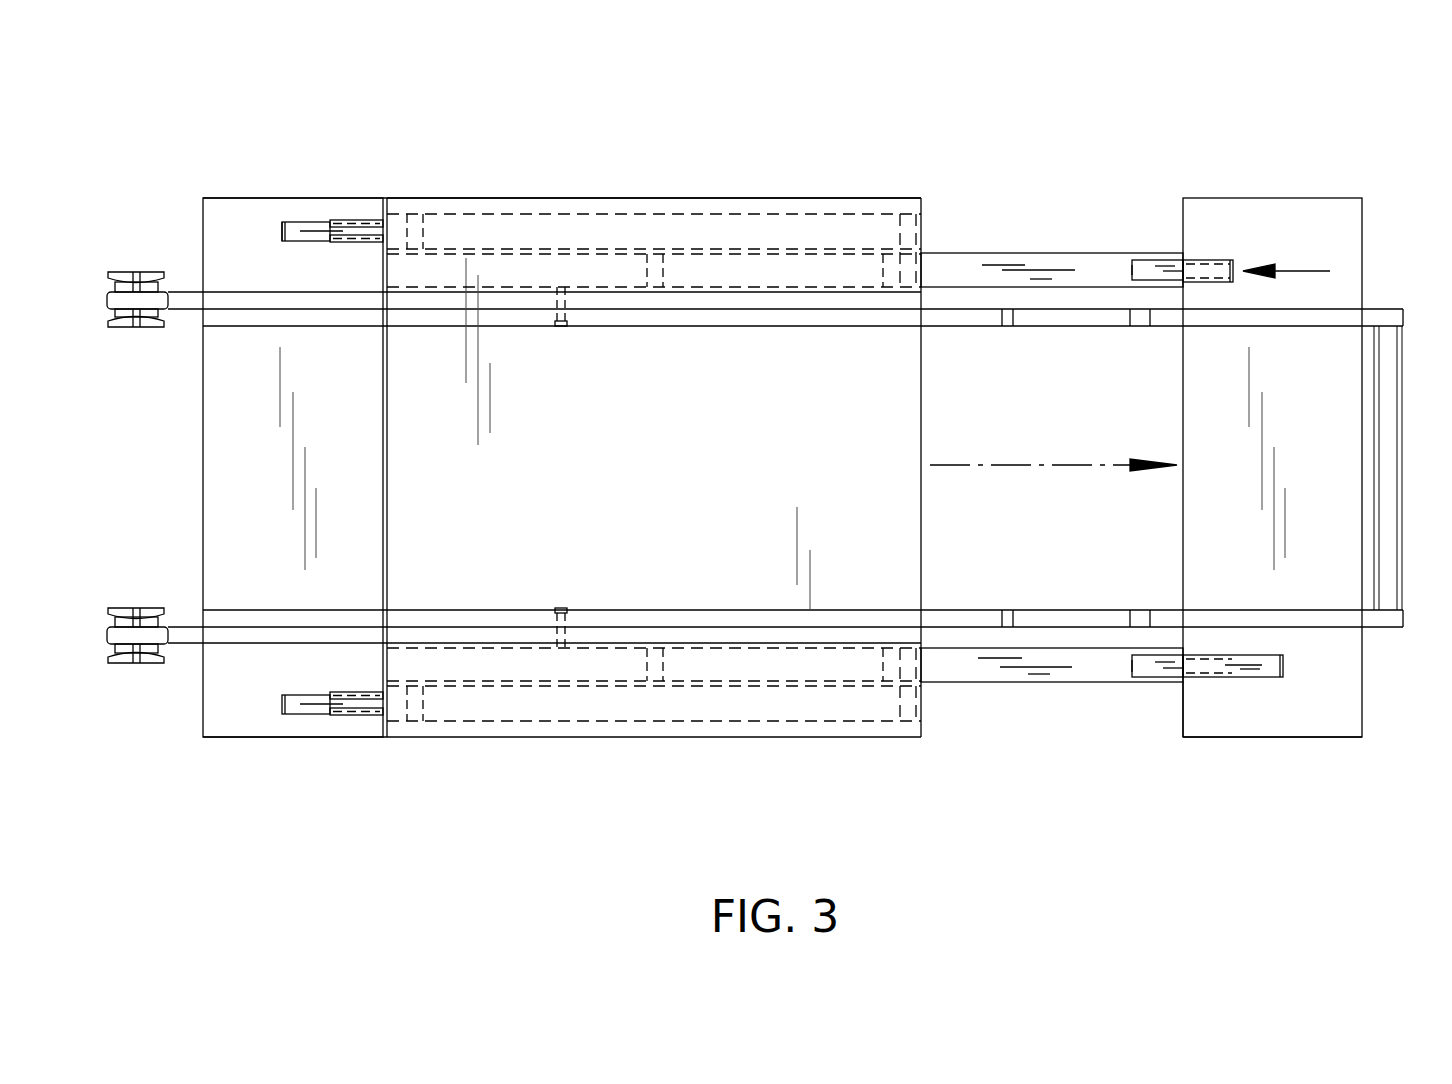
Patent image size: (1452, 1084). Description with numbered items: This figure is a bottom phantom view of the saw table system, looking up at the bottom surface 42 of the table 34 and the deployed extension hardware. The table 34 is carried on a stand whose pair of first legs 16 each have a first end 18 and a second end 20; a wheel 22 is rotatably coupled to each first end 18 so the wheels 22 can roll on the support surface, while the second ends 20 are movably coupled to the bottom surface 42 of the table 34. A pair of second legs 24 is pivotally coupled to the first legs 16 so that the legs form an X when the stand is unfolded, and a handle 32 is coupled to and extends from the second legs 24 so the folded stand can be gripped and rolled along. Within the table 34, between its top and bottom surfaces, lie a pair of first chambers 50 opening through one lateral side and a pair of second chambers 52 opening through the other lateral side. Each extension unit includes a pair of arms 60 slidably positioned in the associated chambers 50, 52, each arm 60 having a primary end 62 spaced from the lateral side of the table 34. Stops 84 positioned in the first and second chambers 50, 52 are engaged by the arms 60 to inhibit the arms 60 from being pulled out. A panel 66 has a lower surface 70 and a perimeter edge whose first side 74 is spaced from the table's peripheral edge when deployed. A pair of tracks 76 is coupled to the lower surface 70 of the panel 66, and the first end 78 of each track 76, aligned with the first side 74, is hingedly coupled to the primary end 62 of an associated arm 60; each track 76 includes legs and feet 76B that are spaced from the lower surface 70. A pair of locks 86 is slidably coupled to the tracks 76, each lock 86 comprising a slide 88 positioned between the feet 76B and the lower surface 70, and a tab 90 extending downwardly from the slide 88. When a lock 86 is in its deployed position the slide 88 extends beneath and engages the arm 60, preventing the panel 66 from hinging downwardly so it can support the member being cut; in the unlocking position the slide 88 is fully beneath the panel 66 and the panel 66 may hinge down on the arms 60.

The first legs 16 is at (352, 290).
The first end 18 is at (178, 290).
The second end 20 is at (927, 287).
The wheels 22 is at (122, 272).
The second legs 24 is at (982, 308).
The handle 32 is at (1403, 318).
The table 34 is at (798, 198).
The bottom surface 42 is at (686, 380).
The first chambers 50 is at (606, 212).
The second chambers 52 is at (443, 285).
The arms 60 is at (1078, 253).
The primary end 62 is at (1185, 260).
The panel 66 is at (1362, 198).
The lower surface 70 is at (1343, 695).
The first side 74 is at (1183, 720).
The tracks 76 is at (1223, 260).
The feet 76B is at (1207, 260).
The first end 78 is at (1183, 283).
The stops 84 is at (417, 222).
The locks 86 is at (308, 224).
The slide 88 is at (336, 226).
The tab 90 is at (282, 232).